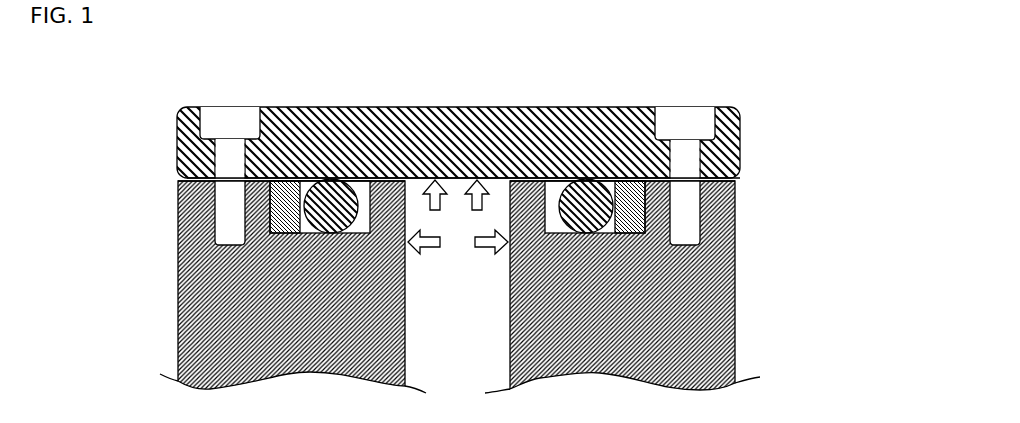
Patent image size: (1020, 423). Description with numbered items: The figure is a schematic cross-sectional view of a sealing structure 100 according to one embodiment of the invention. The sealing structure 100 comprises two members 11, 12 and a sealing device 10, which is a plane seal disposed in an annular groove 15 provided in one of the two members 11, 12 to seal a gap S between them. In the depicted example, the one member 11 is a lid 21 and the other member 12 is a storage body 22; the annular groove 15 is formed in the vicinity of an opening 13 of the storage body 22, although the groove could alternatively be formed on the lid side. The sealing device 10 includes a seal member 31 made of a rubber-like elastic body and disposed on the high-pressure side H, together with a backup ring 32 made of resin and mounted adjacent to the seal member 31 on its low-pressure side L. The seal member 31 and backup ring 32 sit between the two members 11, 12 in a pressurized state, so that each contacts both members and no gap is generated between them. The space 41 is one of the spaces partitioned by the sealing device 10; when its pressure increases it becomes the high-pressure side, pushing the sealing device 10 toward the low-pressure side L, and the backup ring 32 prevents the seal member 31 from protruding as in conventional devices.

The sealing structure 100 is at (892, 88).
The member 11 is at (470, 116).
The lid 21 is at (458, 143).
The member 12 is at (497, 287).
The storage body 22 is at (735, 240).
The opening 13 is at (480, 145).
The annular groove 15 is at (366, 190).
The sealing device 10 is at (281, 181).
The seal member 31 is at (330, 181).
The backup ring 32 is at (457, 135).
The gap S is at (520, 187).
The low-pressure side L is at (391, 192).
The high-pressure side H is at (491, 301).
The space 41 is at (458, 217).